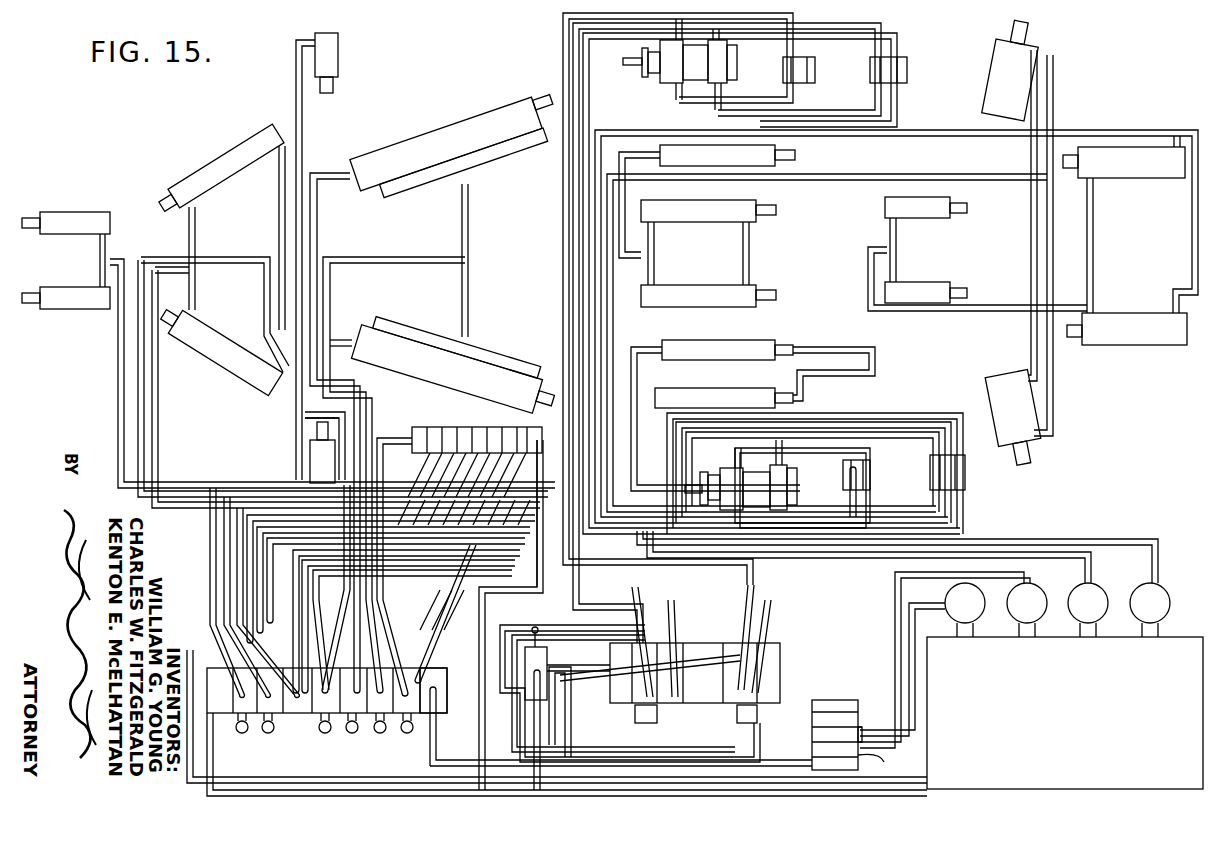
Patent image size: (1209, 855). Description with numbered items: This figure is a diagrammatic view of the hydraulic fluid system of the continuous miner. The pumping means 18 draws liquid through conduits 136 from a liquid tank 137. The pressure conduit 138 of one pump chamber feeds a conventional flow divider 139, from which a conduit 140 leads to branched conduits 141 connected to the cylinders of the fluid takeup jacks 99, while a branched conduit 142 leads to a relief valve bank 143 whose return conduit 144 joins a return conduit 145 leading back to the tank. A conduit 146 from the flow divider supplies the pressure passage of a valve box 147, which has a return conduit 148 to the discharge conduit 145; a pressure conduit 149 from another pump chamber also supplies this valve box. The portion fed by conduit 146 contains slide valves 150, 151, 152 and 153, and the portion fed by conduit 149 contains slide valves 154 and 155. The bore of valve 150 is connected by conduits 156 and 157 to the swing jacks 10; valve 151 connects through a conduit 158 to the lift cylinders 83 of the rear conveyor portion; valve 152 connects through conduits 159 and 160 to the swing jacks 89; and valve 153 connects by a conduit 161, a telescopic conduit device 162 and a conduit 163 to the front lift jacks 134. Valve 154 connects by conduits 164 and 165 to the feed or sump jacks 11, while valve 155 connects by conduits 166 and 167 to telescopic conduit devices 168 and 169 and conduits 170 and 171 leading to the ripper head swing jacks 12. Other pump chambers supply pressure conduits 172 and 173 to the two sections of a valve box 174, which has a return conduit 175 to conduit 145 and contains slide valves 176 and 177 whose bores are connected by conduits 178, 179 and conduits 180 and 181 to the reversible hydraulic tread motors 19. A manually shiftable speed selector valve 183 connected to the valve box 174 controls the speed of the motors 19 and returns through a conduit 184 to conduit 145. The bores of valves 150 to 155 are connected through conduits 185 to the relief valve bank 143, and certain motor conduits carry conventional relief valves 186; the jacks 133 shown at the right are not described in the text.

The fluid jacks 10 is at (398, 158).
The fluid jacks 11 is at (692, 210).
The fluid jacks 12 is at (1138, 164).
The pumping means 18 is at (1146, 602).
The fluid motors 19 is at (690, 63).
The lift cylinders 83 is at (326, 50).
The swing jacks 89 is at (236, 160).
The fluid takeup jacks 99 is at (84, 222).
The cylinder 133 is at (1004, 85).
The front lift jacks 134 is at (924, 208).
The conduits 136 is at (968, 640).
The liquid tank 137 is at (1065, 713).
The pressure conduit 138 is at (914, 695).
The flow divider 139 is at (881, 760).
The conduit 140 is at (220, 787).
The branched conduits 141 is at (107, 257).
The branched conduit 142 is at (211, 486).
The relief valve bank 143 is at (420, 436).
The return conduit 144 is at (537, 572).
The return conduit 145 is at (906, 778).
The conduit 146 is at (434, 708).
The valve box 147 is at (438, 680).
The return conduit 148 is at (214, 690).
The pressure conduit 149 is at (300, 604).
The slide valve 150 is at (325, 733).
The slide valve 151 is at (352, 733).
The slide valve 152 is at (380, 733).
The slide valve 153 is at (407, 733).
The slide valve 154 is at (242, 733).
The slide valve 155 is at (268, 733).
The conduit 156 is at (332, 374).
The conduit 157 is at (368, 386).
The conduit 158 is at (330, 413).
The conduit 159 is at (136, 383).
The conduit 160 is at (150, 407).
The conduit 161 is at (535, 486).
The telescopic conduit device 162 is at (686, 398).
The conduit 163 is at (836, 377).
The conduit 164 is at (238, 552).
The conduit 165 is at (225, 528).
The conduit 166 is at (290, 556).
The conduit 167 is at (300, 580).
The telescopic conduit device 168 is at (736, 152).
The telescopic conduit device 169 is at (736, 350).
The conduit 170 is at (926, 136).
The conduit 171 is at (996, 318).
The pressure conduit 172 is at (896, 584).
The pressure conduit 173 is at (826, 560).
The valve box 174 is at (622, 704).
The return conduit 175 is at (804, 698).
The slide valve 176 is at (656, 723).
The slide valve 177 is at (740, 723).
The conduit 178 is at (585, 563).
The conduit 179 is at (576, 594).
The conduit 180 is at (740, 590).
The conduit 181 is at (746, 608).
The speed selector valve 183 is at (536, 666).
The return conduit 184 is at (540, 714).
The conduits 185 is at (430, 463).
The relief valves 186 is at (889, 66).